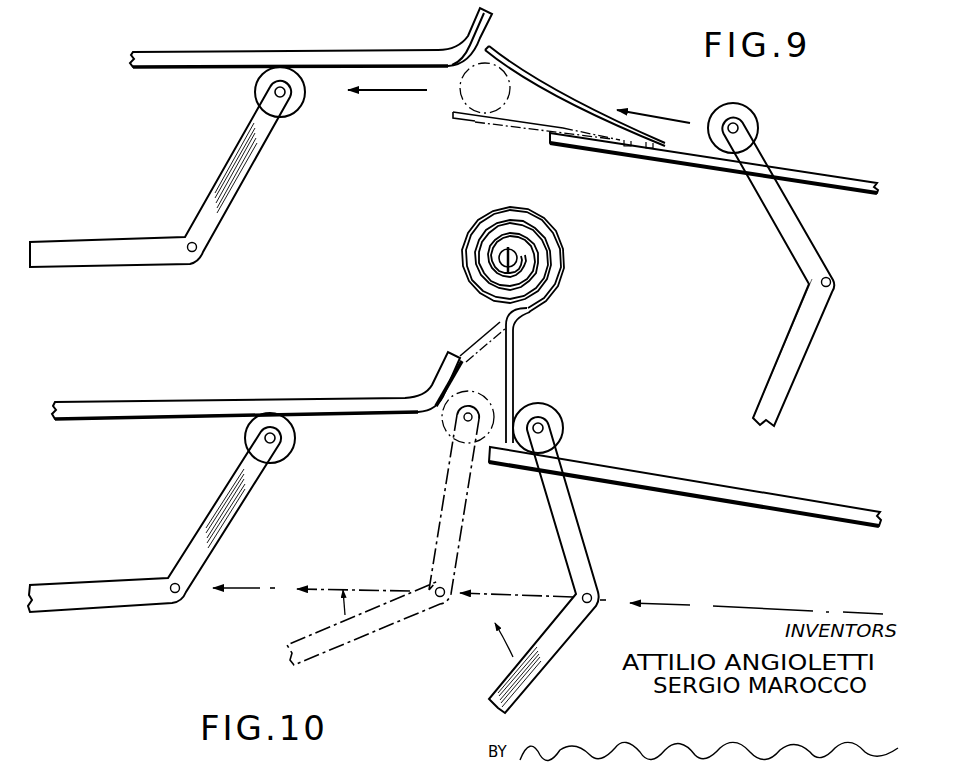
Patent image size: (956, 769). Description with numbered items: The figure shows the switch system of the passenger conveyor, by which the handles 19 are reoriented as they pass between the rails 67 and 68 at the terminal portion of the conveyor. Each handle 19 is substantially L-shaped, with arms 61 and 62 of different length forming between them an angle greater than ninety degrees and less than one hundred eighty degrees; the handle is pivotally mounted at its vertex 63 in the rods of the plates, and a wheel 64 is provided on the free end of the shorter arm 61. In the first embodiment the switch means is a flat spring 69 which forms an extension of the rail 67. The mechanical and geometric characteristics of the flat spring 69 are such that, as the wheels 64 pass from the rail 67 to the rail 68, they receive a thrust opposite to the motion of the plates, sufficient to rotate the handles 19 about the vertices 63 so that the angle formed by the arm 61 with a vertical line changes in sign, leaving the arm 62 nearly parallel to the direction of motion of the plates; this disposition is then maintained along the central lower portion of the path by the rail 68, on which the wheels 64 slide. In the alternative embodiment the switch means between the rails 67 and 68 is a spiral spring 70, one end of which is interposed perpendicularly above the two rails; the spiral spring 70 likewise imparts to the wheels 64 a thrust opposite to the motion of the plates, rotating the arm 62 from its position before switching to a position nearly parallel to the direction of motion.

In FIG. 9, the handle 19 is at (92, 238).
In FIG. 10, the handle 19 is at (87, 582).
In FIG. 9, the arm 61 is at (762, 200).
In FIG. 9, the arm 62 is at (778, 400).
In FIG. 9, the vertex 63 is at (831, 284).
In FIG. 10, the vertex 63 is at (175, 595).
In FIG. 9, the wheel 64 is at (472, 88).
In FIG. 10, the wheel 64 is at (555, 407).
In FIG. 9, the rail 67 is at (838, 177).
In FIG. 10, the rail 67 is at (810, 498).
In FIG. 9, the rail 68 is at (183, 56).
In FIG. 10, the rail 68 is at (138, 400).
In FIG. 9, the flat spring 69 is at (535, 97).
In FIG. 10, the spiral spring 70 is at (455, 265).